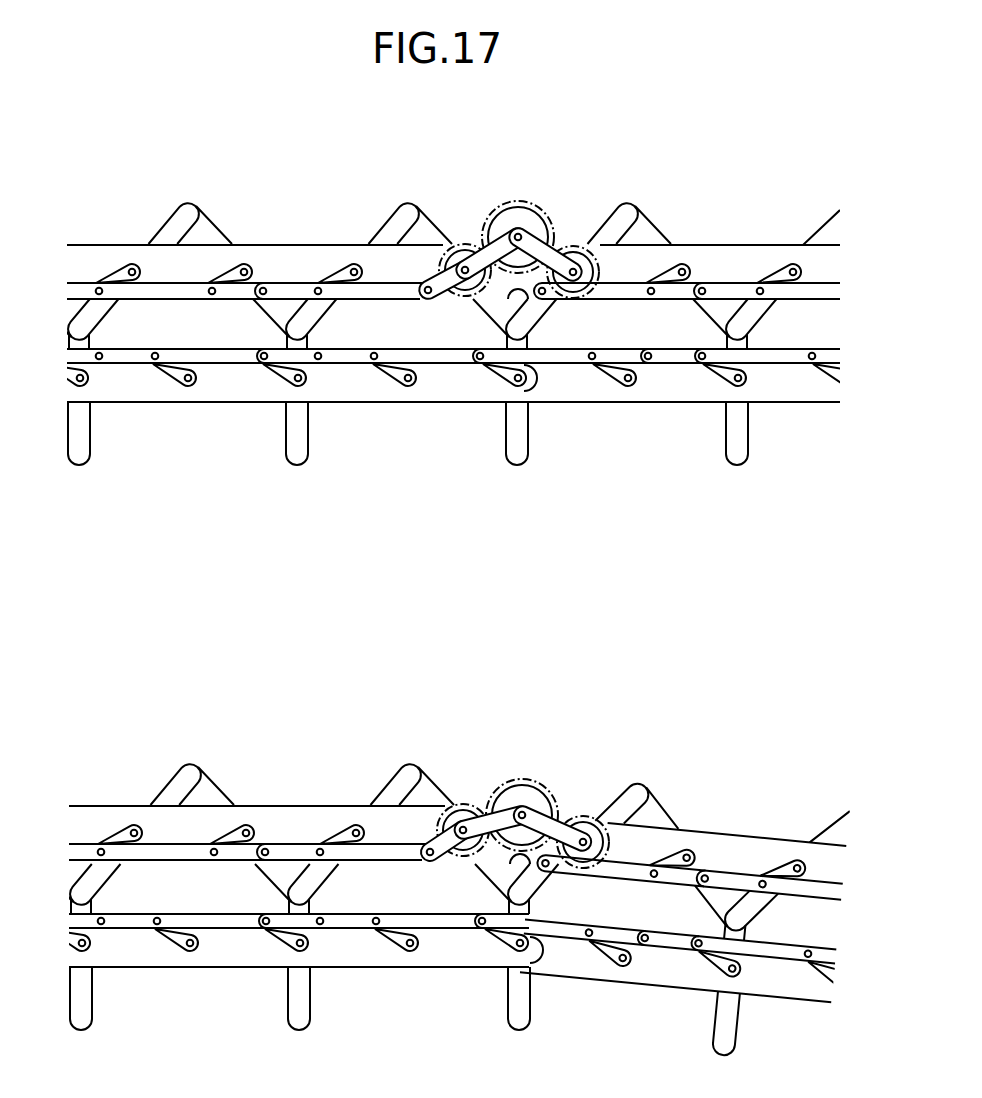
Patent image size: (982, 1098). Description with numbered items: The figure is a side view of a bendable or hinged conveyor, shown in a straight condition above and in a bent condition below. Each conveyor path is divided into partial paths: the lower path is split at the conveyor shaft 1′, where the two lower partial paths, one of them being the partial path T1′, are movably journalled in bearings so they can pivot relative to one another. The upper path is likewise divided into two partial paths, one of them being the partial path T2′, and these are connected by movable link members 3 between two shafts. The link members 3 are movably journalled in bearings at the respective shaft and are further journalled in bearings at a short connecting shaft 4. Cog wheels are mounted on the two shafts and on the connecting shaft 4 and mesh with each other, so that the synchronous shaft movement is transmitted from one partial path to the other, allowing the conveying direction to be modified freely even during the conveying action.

The partial path T2′ is at (243, 814).
The partial path T1′ is at (214, 1038).
The link member 3 is at (494, 208).
The short connecting shaft 4 is at (518, 232).
The conveyor shaft 1′ is at (526, 393).